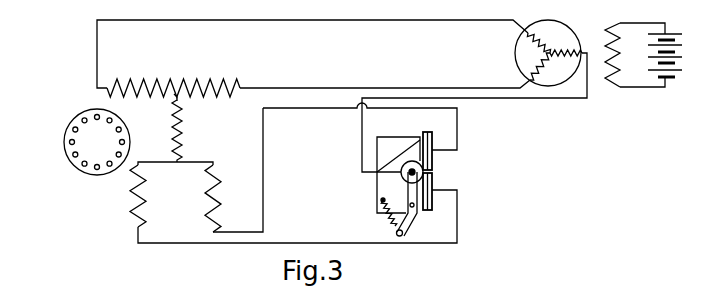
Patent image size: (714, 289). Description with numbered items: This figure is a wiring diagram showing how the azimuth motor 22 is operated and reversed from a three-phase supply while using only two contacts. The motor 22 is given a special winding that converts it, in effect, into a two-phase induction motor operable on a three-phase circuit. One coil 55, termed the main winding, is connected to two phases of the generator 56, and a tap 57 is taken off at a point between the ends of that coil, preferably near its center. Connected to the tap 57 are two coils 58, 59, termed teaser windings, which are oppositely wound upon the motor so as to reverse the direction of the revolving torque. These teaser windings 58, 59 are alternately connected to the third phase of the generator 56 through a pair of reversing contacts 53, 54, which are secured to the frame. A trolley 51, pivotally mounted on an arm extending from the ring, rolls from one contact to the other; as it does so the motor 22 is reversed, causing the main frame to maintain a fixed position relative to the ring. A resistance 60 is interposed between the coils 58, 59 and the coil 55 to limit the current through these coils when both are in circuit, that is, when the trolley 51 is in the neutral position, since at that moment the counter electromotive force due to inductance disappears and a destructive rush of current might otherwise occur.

The motor 22 is at (73, 150).
The trolley 51 is at (406, 176).
The reversing contact 53 is at (433, 158).
The reversing contact 54 is at (433, 177).
The coil 55 is at (168, 87).
The generator 56 is at (560, 75).
The tap 57 is at (179, 99).
The teaser winding 58 is at (147, 194).
The teaser winding 59 is at (222, 197).
The resistance 60 is at (173, 122).